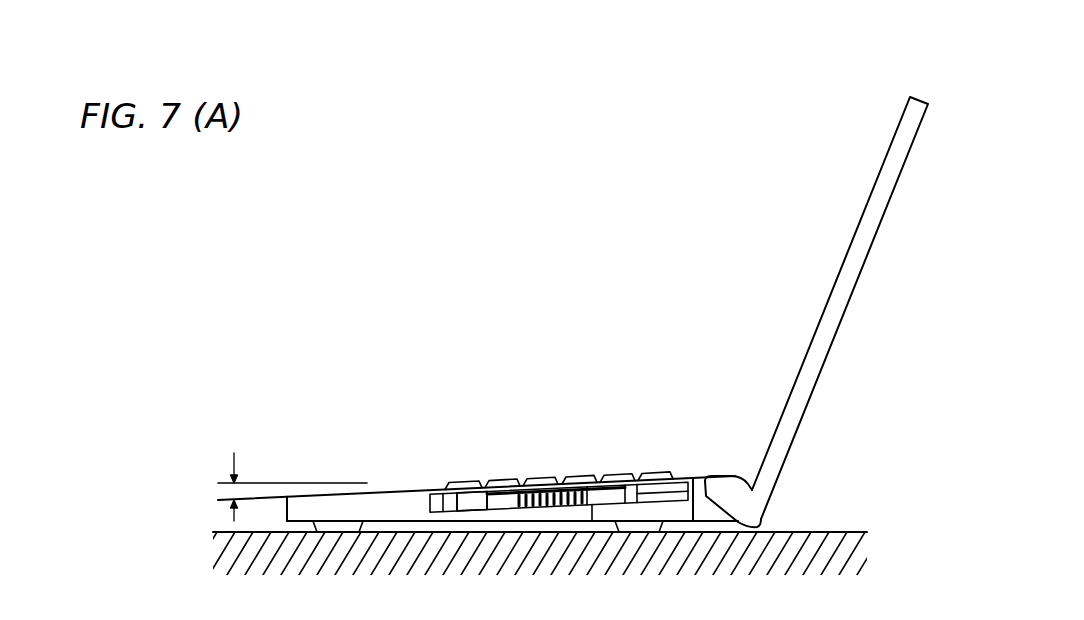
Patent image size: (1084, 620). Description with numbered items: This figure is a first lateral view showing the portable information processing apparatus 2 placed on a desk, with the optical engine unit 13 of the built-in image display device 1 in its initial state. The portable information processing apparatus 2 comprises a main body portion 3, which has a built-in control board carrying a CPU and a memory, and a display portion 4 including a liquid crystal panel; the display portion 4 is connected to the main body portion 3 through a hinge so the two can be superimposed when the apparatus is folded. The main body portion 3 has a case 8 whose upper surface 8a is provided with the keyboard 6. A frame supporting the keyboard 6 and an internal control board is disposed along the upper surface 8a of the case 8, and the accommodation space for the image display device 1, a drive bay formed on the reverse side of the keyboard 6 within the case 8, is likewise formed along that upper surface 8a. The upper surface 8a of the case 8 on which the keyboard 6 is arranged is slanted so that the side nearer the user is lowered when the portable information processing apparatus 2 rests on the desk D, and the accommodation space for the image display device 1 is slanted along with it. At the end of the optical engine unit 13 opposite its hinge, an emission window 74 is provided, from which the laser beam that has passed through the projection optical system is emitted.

The image display device 1 is at (474, 516).
The portable information processing apparatus 2 is at (500, 271).
The main body portion 3 is at (388, 491).
The display portion 4 is at (846, 256).
The keyboard 6 is at (618, 472).
The case 8 is at (407, 521).
The upper surface 8a is at (431, 489).
The optical engine unit 13 is at (590, 506).
The emission window 74 is at (473, 499).
The desk surface D is at (828, 530).